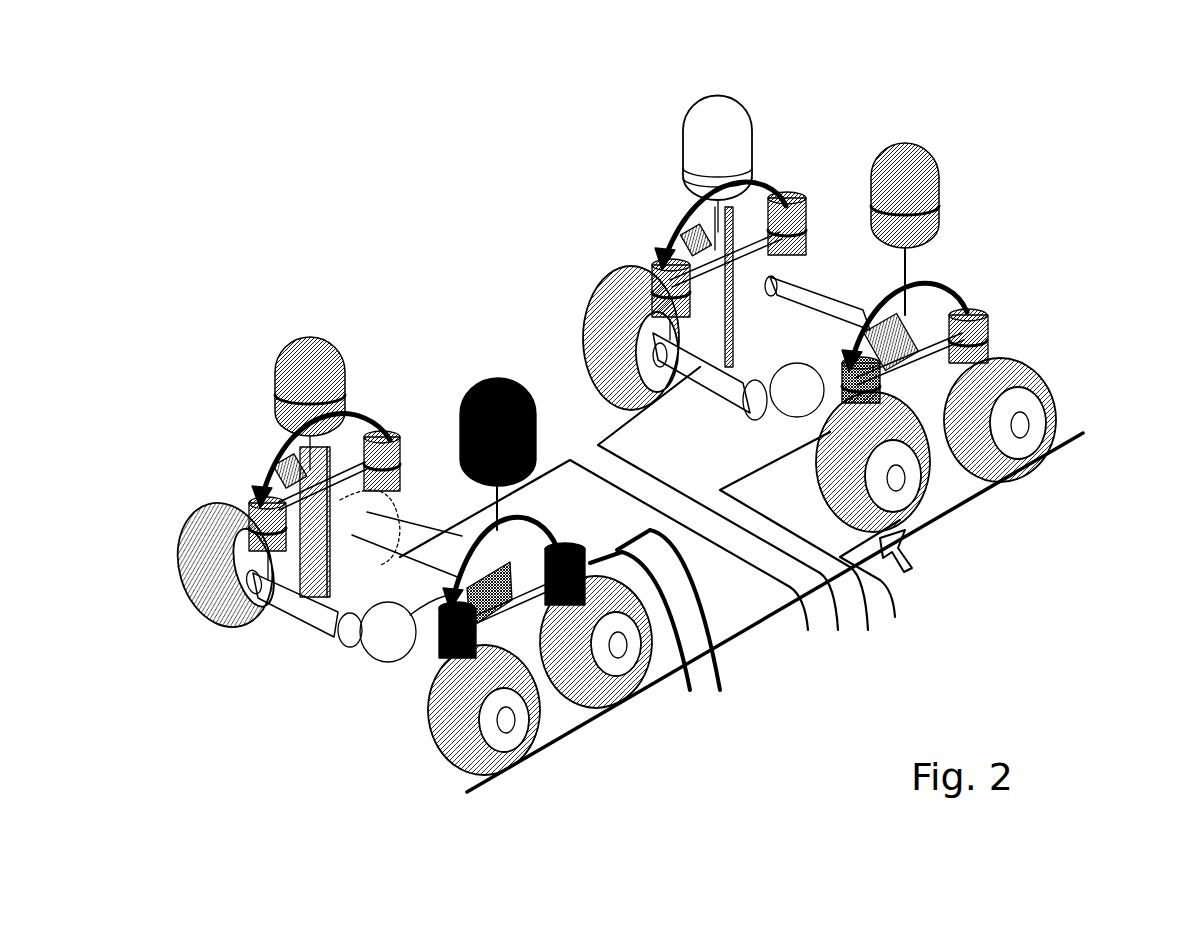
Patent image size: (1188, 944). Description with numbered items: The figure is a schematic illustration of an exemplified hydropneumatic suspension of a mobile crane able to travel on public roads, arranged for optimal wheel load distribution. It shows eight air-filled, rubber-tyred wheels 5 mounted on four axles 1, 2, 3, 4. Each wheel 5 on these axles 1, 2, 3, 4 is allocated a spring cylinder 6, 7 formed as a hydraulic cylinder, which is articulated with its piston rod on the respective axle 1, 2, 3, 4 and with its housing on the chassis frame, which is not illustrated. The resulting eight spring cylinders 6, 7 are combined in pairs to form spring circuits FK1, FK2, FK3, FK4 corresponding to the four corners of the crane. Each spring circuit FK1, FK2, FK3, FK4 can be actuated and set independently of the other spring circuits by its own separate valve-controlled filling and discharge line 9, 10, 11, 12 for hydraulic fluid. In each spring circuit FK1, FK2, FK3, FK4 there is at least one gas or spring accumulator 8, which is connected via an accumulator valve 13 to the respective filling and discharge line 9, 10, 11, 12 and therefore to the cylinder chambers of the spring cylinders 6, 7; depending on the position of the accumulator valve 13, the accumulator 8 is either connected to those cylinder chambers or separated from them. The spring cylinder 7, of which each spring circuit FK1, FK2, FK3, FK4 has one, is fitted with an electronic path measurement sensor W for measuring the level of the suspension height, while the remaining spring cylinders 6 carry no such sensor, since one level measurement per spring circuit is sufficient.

The axle 1 is at (310, 613).
The axle 2 is at (432, 545).
The axle 3 is at (627, 403).
The axle 4 is at (823, 297).
The wheel 5 is at (210, 560).
The spring cylinder 6 is at (257, 503).
The spring cylinder 7 is at (398, 480).
The gas or spring accumulator 8 is at (310, 350).
The filling and discharge line 9 is at (840, 639).
The filling and discharge line 10 is at (875, 623).
The filling and discharge line 11 is at (911, 618).
The filling and discharge line 12 is at (796, 643).
The accumulator valve 13 is at (288, 463).
The path measurement sensor W is at (393, 490).
The spring circuit FK1 is at (226, 352).
The spring circuit FK2 is at (628, 128).
The spring circuit FK3 is at (1064, 554).
The spring circuit FK4 is at (598, 798).